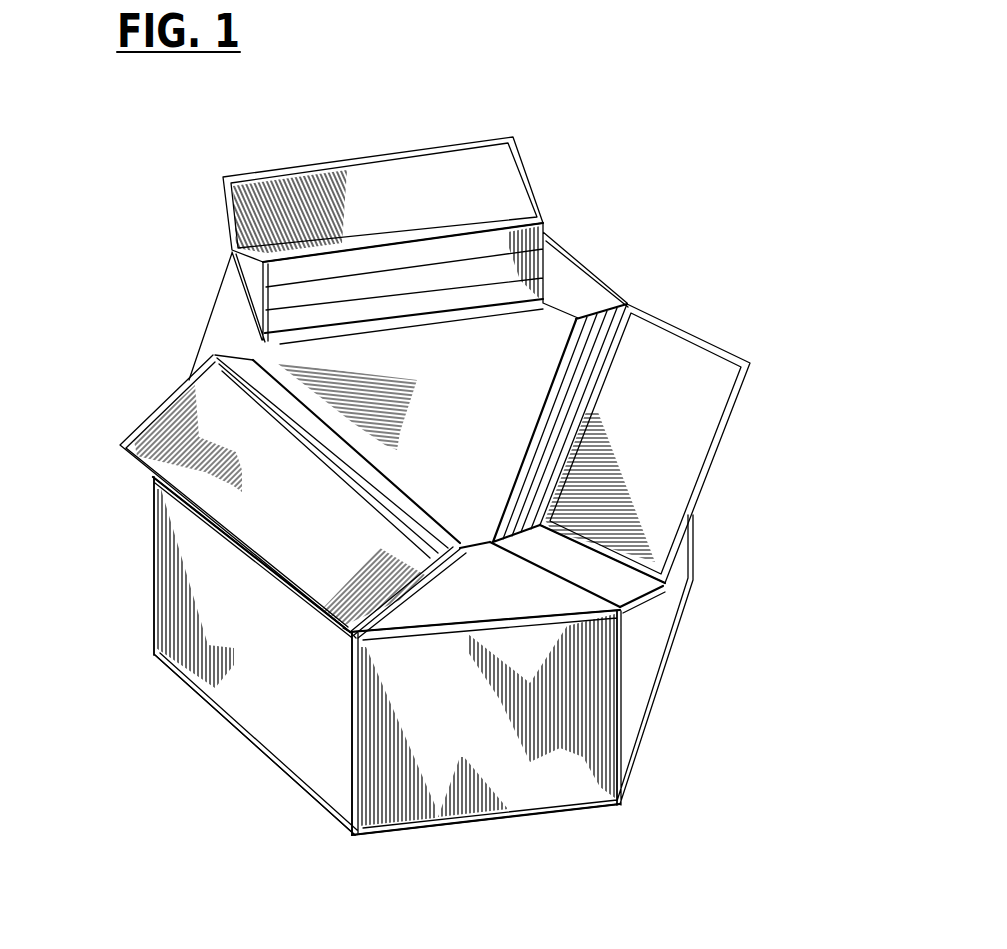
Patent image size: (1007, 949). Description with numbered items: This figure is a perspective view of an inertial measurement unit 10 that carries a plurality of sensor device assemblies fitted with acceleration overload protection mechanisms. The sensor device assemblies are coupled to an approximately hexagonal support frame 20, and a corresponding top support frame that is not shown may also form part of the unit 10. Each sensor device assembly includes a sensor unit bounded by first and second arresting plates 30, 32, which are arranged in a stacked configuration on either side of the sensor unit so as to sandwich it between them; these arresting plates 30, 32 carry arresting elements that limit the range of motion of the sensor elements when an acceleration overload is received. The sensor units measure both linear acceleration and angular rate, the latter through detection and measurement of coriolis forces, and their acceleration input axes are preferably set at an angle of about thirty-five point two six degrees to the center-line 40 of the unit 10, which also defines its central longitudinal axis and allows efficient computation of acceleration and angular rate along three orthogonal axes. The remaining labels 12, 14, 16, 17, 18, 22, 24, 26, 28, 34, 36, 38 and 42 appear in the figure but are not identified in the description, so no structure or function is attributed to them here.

The inertial measurement unit 10 is at (200, 735).
The left side wall 12 is at (193, 517).
The lid 14 is at (276, 168).
The right side panel 16 is at (675, 322).
The front wall 17 is at (528, 793).
The front left corner hinge 18 is at (343, 629).
The hexagonal support frame 20 is at (537, 263).
The front right corner hinge 22 is at (640, 597).
The direction arrow 24 is at (260, 472).
The direction arrow 26 is at (392, 193).
The direction arrow 28 is at (675, 438).
The first arresting plate 30 is at (441, 400).
The second arresting plate 32 is at (320, 512).
The left flap hinge strip 34 is at (415, 585).
The lid top surface 36 is at (384, 205).
The container floor 38 is at (320, 340).
The center-line 40 is at (648, 398).
The right flap hinge strip 42 is at (556, 388).